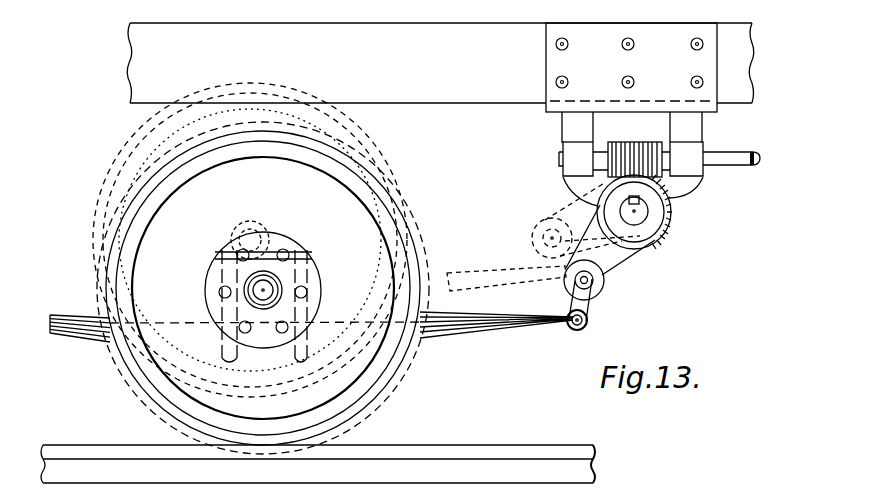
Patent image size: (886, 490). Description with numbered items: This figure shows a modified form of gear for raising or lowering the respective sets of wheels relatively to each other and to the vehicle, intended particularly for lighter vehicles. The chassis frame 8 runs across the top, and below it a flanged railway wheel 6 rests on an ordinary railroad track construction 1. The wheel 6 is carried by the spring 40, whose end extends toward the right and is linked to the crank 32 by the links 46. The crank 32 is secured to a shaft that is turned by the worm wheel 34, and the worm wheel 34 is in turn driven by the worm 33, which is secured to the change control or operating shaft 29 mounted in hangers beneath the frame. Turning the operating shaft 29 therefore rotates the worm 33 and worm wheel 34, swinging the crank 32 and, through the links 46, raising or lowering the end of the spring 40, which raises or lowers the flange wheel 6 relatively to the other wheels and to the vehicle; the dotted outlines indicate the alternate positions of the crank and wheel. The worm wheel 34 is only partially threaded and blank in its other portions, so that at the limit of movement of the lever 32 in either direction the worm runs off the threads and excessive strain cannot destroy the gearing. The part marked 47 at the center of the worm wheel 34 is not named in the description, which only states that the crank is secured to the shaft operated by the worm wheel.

The railroad track construction 1 is at (432, 445).
The flanged railway wheels 6 is at (402, 367).
The chassis frame 8 is at (440, 63).
The operating shaft 29 is at (741, 160).
The crank 32 is at (577, 216).
The worm 33 is at (632, 166).
The worm wheel 34 is at (667, 214).
The spring 40 is at (531, 323).
The links 46 is at (588, 307).
The gear hub shaft 47 is at (641, 218).